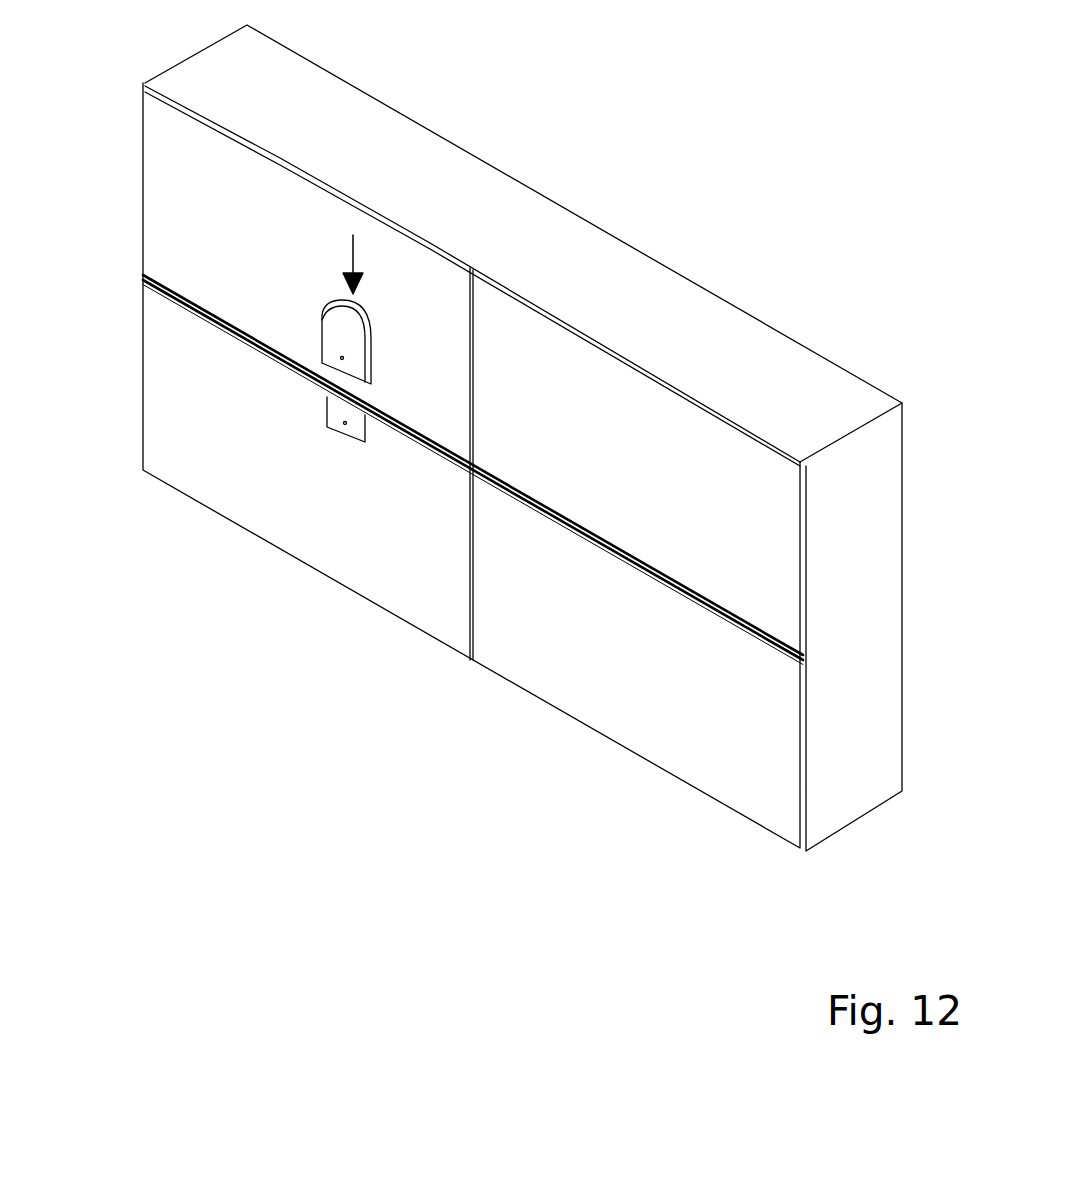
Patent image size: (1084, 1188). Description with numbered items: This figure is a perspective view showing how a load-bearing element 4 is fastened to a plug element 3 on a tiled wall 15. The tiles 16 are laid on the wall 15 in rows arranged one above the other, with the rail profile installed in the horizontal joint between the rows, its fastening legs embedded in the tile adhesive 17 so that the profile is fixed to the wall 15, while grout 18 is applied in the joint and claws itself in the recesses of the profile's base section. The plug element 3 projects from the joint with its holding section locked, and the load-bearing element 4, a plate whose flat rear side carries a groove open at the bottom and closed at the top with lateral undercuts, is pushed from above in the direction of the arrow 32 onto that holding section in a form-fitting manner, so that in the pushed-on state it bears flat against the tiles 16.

The plug element 3 is at (335, 427).
The load-bearing element 4 is at (327, 314).
The wall 15 is at (655, 300).
The tiles 16 is at (183, 395).
The tile adhesive 17 is at (566, 323).
The grout 18 is at (471, 347).
The arrow 32 is at (358, 250).